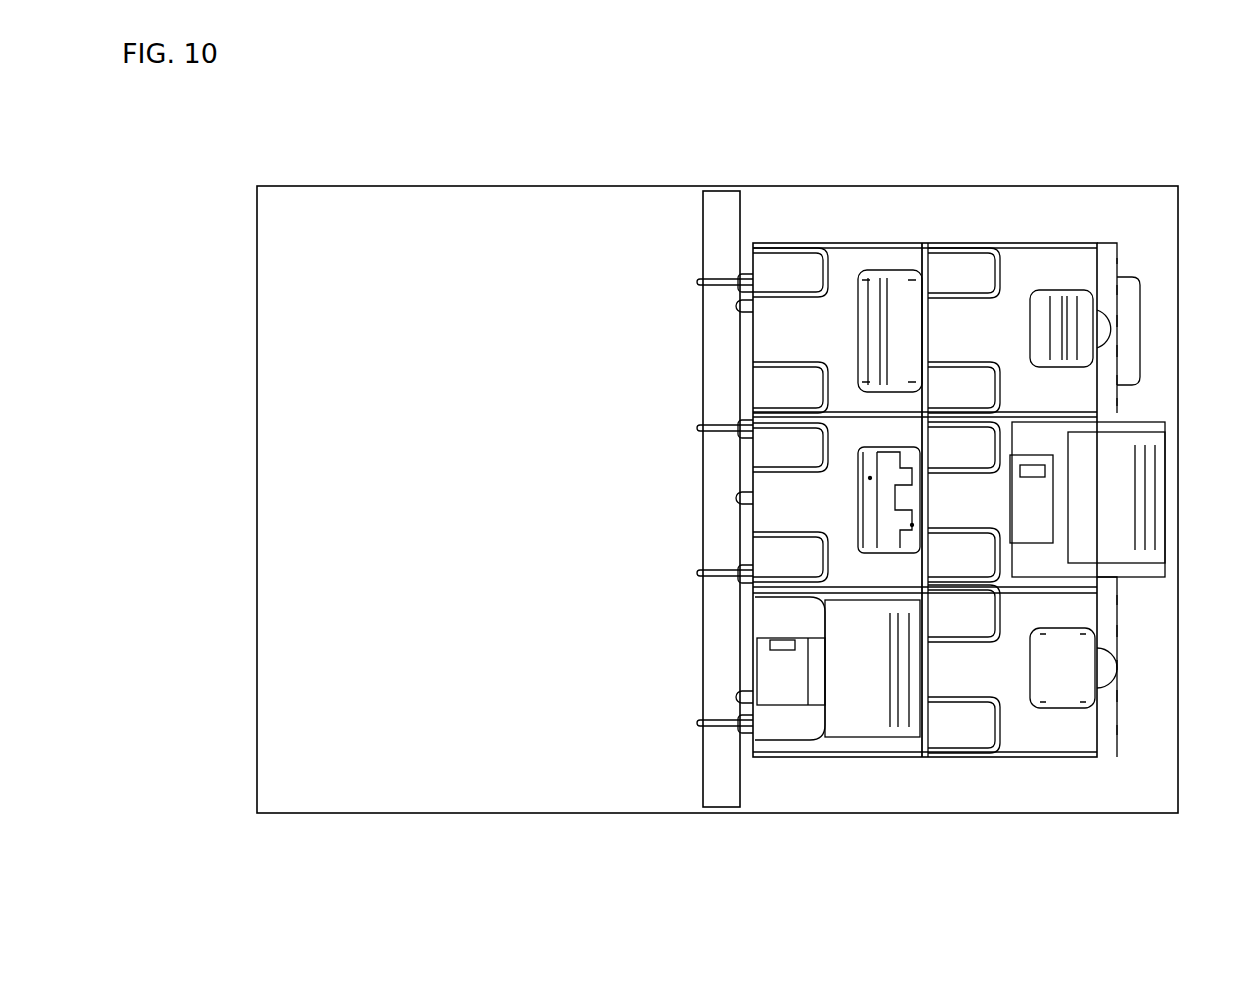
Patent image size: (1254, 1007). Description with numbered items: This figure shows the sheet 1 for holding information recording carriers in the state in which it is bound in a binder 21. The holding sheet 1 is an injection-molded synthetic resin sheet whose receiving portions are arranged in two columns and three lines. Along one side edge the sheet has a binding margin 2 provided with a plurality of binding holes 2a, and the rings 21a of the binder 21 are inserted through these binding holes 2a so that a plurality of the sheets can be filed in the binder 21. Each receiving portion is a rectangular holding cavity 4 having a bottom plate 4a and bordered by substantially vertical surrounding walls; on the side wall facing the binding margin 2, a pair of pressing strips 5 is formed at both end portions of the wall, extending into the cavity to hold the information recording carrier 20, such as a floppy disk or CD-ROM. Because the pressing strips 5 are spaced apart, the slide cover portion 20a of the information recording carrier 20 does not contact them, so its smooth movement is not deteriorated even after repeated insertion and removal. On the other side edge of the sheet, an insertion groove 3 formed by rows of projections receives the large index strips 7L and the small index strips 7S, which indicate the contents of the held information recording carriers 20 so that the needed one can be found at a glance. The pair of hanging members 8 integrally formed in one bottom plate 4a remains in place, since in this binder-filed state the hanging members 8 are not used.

The holding sheet 1 is at (876, 228).
The binding margin 2 is at (740, 473).
The binding holes 2a is at (742, 270).
The insertion groove 3 is at (1120, 402).
The holding cavity 4 is at (1006, 250).
The bottom plate 4a is at (841, 262).
The pressing strips 5 is at (810, 273).
The large index strips 7L is at (870, 343).
The small index strips 7S is at (1073, 322).
The hanging members 8 is at (913, 482).
The information recording carrier 20 is at (1108, 535).
The slide cover portion 20a is at (1036, 497).
The binder 21 is at (657, 232).
The rings 21a is at (697, 282).